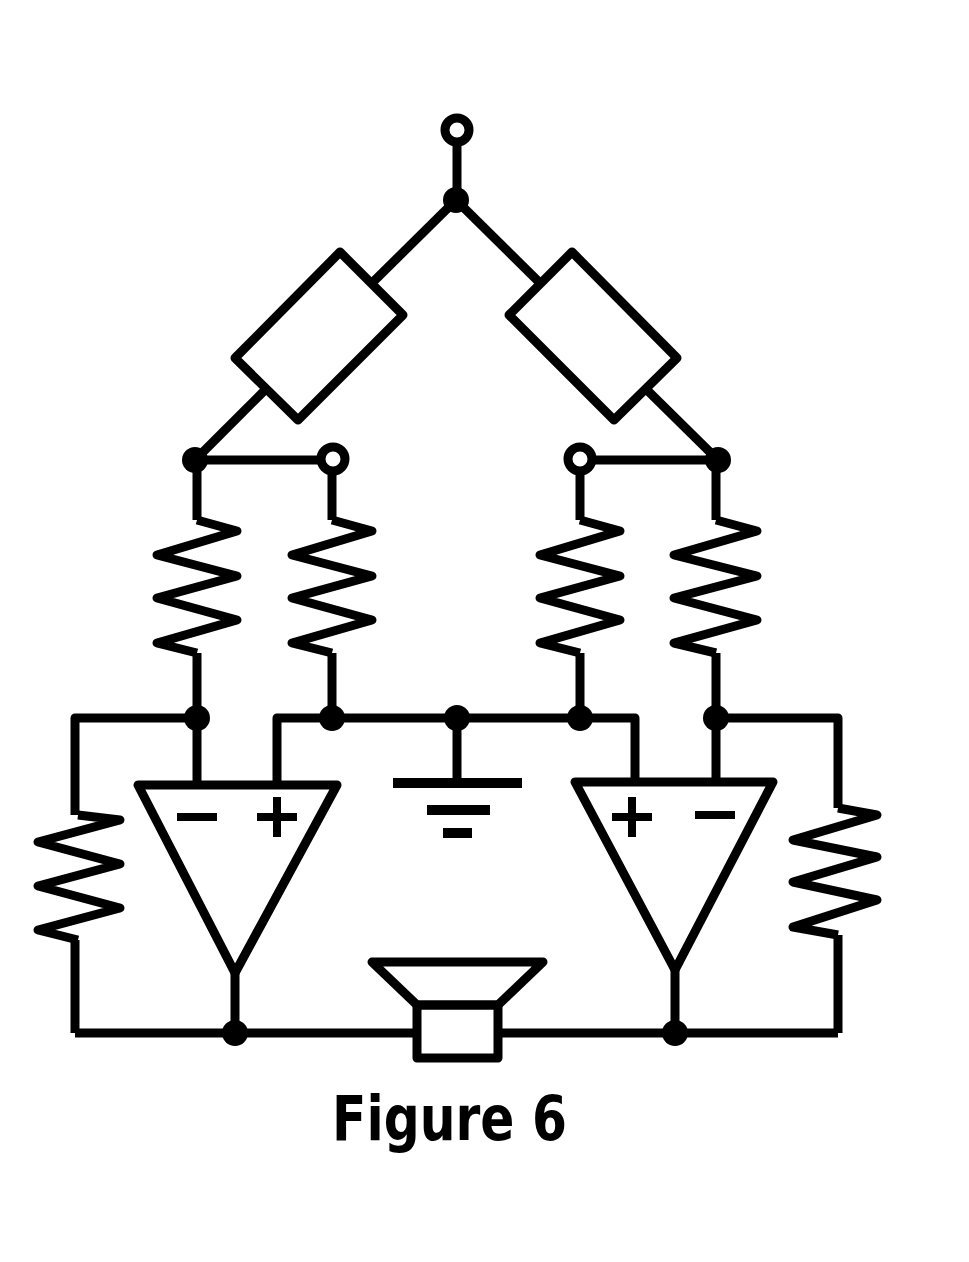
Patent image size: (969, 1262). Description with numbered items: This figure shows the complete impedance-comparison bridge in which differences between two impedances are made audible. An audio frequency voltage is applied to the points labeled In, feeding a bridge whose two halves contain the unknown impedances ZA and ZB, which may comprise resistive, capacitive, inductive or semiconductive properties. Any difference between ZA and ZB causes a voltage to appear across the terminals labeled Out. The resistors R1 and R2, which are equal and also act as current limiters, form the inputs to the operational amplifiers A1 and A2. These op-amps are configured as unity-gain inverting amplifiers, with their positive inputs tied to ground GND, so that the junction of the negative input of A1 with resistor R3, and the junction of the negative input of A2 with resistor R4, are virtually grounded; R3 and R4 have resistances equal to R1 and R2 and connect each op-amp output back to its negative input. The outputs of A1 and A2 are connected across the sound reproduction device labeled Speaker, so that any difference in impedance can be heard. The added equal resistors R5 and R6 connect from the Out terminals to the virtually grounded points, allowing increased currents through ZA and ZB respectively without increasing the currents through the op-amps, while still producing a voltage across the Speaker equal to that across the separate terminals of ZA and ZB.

The input points In is at (459, 121).
The output terminals Out is at (456, 457).
The impedance ZA is at (319, 330).
The impedance ZB is at (587, 330).
The resistor R1 is at (152, 589).
The resistor R2 is at (769, 589).
The resistor R3 is at (116, 924).
The resistor R4 is at (802, 920).
The resistor R5 is at (367, 594).
The resistor R6 is at (547, 594).
The operational amplifier A1 is at (237, 909).
The operational amplifier A2 is at (674, 907).
The ground GND is at (457, 775).
The speaker Speaker is at (458, 961).